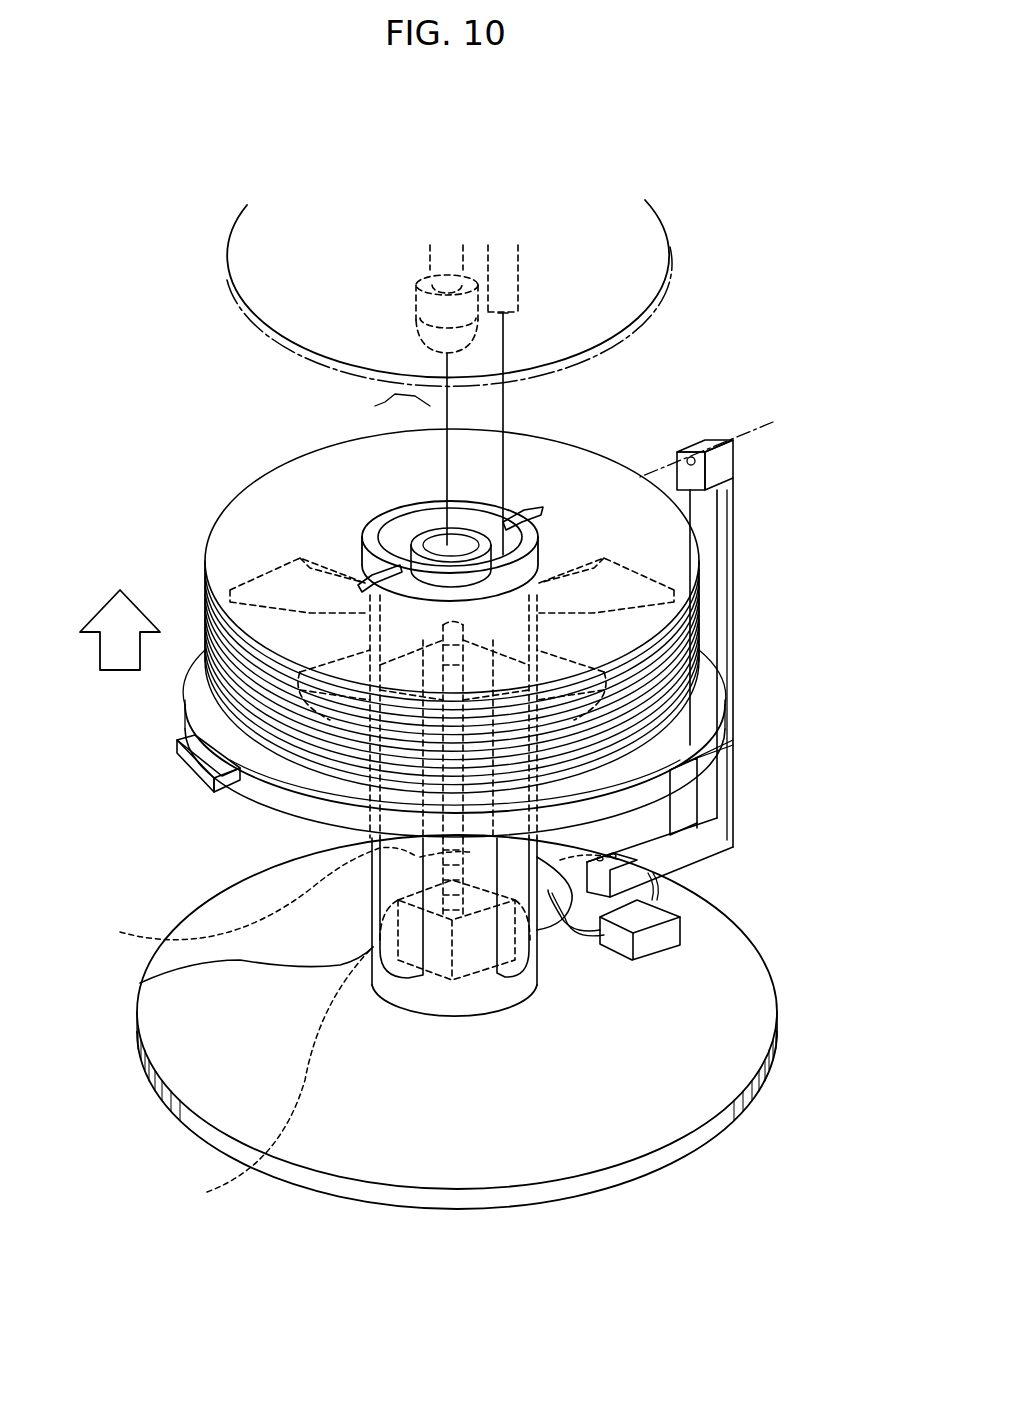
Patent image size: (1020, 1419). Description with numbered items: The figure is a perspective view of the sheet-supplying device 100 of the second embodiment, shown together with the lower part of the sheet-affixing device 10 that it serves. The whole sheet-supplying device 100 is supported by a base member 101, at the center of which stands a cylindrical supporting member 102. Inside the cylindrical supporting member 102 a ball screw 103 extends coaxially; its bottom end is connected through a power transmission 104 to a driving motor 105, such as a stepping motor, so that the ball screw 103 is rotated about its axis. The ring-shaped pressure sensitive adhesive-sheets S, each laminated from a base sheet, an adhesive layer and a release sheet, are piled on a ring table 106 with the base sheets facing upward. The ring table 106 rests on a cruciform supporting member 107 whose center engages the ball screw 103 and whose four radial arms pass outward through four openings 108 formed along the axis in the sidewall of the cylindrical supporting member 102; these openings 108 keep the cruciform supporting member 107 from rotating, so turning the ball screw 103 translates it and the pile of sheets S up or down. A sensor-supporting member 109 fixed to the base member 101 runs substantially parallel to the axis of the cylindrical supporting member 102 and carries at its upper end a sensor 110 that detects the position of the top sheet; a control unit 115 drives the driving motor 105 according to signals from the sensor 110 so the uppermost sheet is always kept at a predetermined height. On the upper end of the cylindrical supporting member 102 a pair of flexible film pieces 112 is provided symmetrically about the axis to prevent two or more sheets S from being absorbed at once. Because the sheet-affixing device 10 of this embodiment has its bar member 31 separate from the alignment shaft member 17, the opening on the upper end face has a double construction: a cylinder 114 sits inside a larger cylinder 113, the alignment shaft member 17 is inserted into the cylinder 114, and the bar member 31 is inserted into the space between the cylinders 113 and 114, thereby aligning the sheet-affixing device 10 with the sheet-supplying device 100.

The sheet-affixing device 10 is at (254, 233).
The alignment shaft member 17 is at (430, 338).
The bar member 31 is at (503, 278).
The pressure sensitive adhesive-sheets S is at (245, 520).
The cylinder 113 is at (400, 548).
The cylinder 114 is at (437, 550).
The film pieces 112 is at (525, 515).
The sensor 110 is at (700, 455).
The sensor-supporting member 109 is at (735, 800).
The ring table 106 is at (322, 790).
The cruciform supporting member 107 is at (185, 762).
The base member 101 is at (727, 987).
The cylindrical supporting member 102 is at (480, 993).
The ball screw 103 is at (150, 935).
The openings 108 is at (140, 983).
The power transmission 104 is at (258, 1165).
The driving motor 105 is at (553, 897).
The control unit 115 is at (660, 912).
The sheet-supplying device 100 is at (492, 1268).